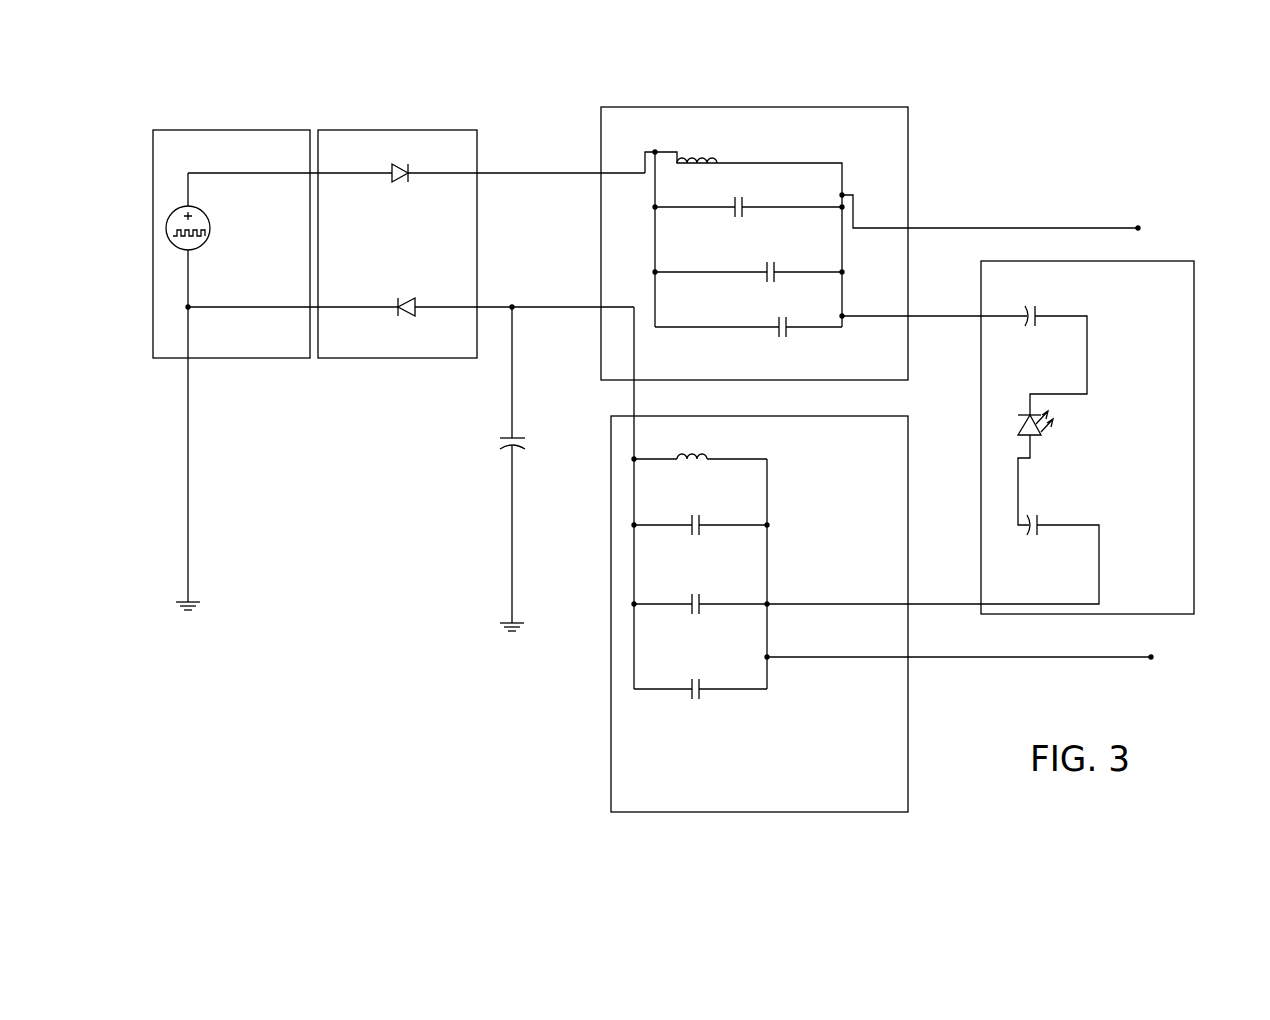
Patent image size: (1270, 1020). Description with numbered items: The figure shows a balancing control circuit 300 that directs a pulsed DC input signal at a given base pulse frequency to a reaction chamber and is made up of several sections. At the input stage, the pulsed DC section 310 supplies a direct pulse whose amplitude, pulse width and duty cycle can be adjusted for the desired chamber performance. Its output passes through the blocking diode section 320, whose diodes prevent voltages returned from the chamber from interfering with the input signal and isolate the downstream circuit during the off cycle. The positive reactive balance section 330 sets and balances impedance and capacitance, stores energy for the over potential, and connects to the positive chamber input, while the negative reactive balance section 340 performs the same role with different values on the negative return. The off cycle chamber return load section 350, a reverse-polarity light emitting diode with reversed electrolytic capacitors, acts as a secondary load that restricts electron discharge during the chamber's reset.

The circuit 300 is at (1041, 98).
The pulsed DC section 310 is at (232, 130).
The blocking diode section 320 is at (400, 130).
The positive reactive balance section 330 is at (601, 127).
The negative reactive balance section 340 is at (611, 682).
The off cycle chamber return load section 350 is at (1194, 310).